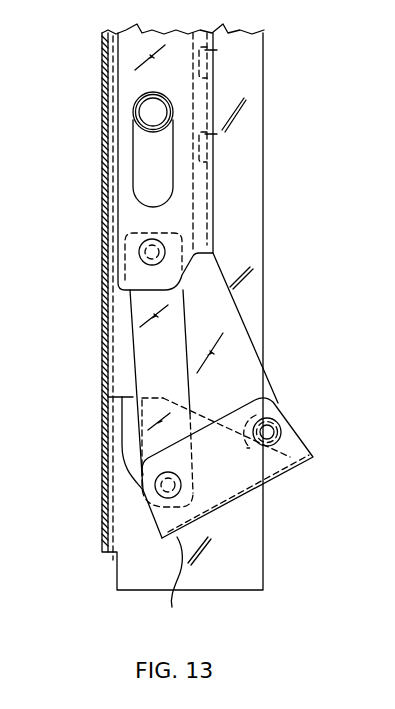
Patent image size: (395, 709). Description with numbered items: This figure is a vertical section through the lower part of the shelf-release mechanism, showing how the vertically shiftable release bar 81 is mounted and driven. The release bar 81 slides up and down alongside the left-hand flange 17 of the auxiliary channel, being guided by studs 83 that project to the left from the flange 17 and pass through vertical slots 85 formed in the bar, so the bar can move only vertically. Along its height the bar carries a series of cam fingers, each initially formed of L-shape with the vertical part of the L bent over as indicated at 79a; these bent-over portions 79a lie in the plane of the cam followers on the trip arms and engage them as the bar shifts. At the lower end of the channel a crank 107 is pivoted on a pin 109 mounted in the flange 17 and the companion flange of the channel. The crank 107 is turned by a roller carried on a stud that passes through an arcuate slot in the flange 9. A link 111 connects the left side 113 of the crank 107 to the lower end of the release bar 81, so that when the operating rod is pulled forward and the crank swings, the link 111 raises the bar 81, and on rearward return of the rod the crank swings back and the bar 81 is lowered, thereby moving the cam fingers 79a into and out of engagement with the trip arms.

The flange 9 is at (263, 537).
The left-hand flange 17 is at (250, 347).
The bent-over part of cam finger 79a is at (217, 50).
The release bar 81 is at (220, 223).
The stud 83 is at (150, 113).
The vertical slot 85 is at (134, 169).
The crank 107 is at (190, 580).
The pin 109 is at (270, 430).
The link 111 is at (131, 338).
The left side of crank 113 is at (154, 520).